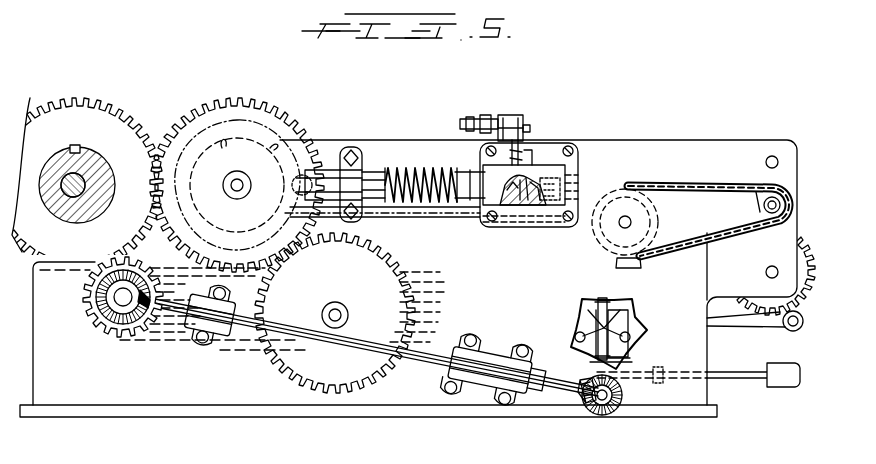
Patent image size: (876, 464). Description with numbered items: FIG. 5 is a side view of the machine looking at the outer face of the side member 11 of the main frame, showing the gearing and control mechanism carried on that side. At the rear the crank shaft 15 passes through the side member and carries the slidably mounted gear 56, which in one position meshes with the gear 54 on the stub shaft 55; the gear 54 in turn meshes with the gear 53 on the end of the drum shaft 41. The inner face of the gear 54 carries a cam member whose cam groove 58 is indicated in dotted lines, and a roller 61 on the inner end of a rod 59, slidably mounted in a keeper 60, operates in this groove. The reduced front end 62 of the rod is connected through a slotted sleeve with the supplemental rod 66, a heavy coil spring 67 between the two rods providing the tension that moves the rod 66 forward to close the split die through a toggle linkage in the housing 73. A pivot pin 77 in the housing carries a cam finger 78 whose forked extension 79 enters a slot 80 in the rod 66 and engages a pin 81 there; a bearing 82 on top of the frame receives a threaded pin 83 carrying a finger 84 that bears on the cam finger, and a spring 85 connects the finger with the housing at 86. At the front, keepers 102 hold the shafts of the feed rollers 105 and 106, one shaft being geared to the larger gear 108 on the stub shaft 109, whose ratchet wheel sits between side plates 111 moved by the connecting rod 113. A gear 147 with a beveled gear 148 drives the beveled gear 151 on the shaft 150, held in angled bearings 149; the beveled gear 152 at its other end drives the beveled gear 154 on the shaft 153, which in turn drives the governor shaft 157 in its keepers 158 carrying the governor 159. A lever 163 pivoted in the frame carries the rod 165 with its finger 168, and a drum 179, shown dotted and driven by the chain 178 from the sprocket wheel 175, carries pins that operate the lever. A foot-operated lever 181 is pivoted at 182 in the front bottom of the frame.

The side member 11 is at (464, 279).
The crank shaft 15 is at (47, 172).
The shaft 41 is at (348, 311).
The gear 53 is at (335, 313).
The gear 54 is at (222, 102).
The stub shaft 55 is at (236, 192).
The gear 56 is at (42, 104).
The cam groove 58 is at (273, 144).
The rod 59 is at (329, 168).
The keeper 60 is at (352, 170).
The roller 61 is at (292, 188).
The reduced portion 62 is at (409, 206).
The supplemental rod 66 is at (470, 178).
The coil spring 67 is at (393, 168).
The housing 73 is at (490, 208).
The pivot pin 77 is at (516, 187).
The cam finger 78 is at (512, 152).
The forked extension 79 is at (524, 204).
The slot 80 is at (512, 206).
The pin 81 is at (538, 204).
The bearing 82 is at (509, 116).
The threaded pin 83 is at (474, 118).
The finger 84 is at (527, 132).
The spring 85 is at (534, 160).
The spring connection 86 is at (548, 176).
The keepers 102 is at (786, 142).
The feed roller 105 is at (780, 160).
The feed roller 106 is at (786, 202).
The gear 108 is at (806, 284).
The stub shaft 109 is at (779, 270).
The side plates 111 is at (803, 318).
The connecting rod 113 is at (754, 326).
The gear 147 is at (84, 298).
The beveled gear 148 is at (98, 312).
The bearings 149 is at (210, 332).
The shaft 150 is at (340, 340).
The beveled gear 151 is at (145, 318).
The beveled gear 152 is at (588, 400).
The shaft 153 is at (602, 410).
The beveled gear 154 is at (612, 406).
The governor shaft 157 is at (612, 313).
The keepers 158 is at (604, 298).
The governor 159 is at (590, 312).
The lever 163 is at (642, 262).
The rod 165 is at (630, 338).
The finger 168 is at (633, 362).
The sprocket wheel 175 is at (752, 192).
The chain 178 is at (708, 188).
The drum 179 is at (625, 190).
The foot-operated lever 181 is at (745, 380).
The pivot 182 is at (665, 380).